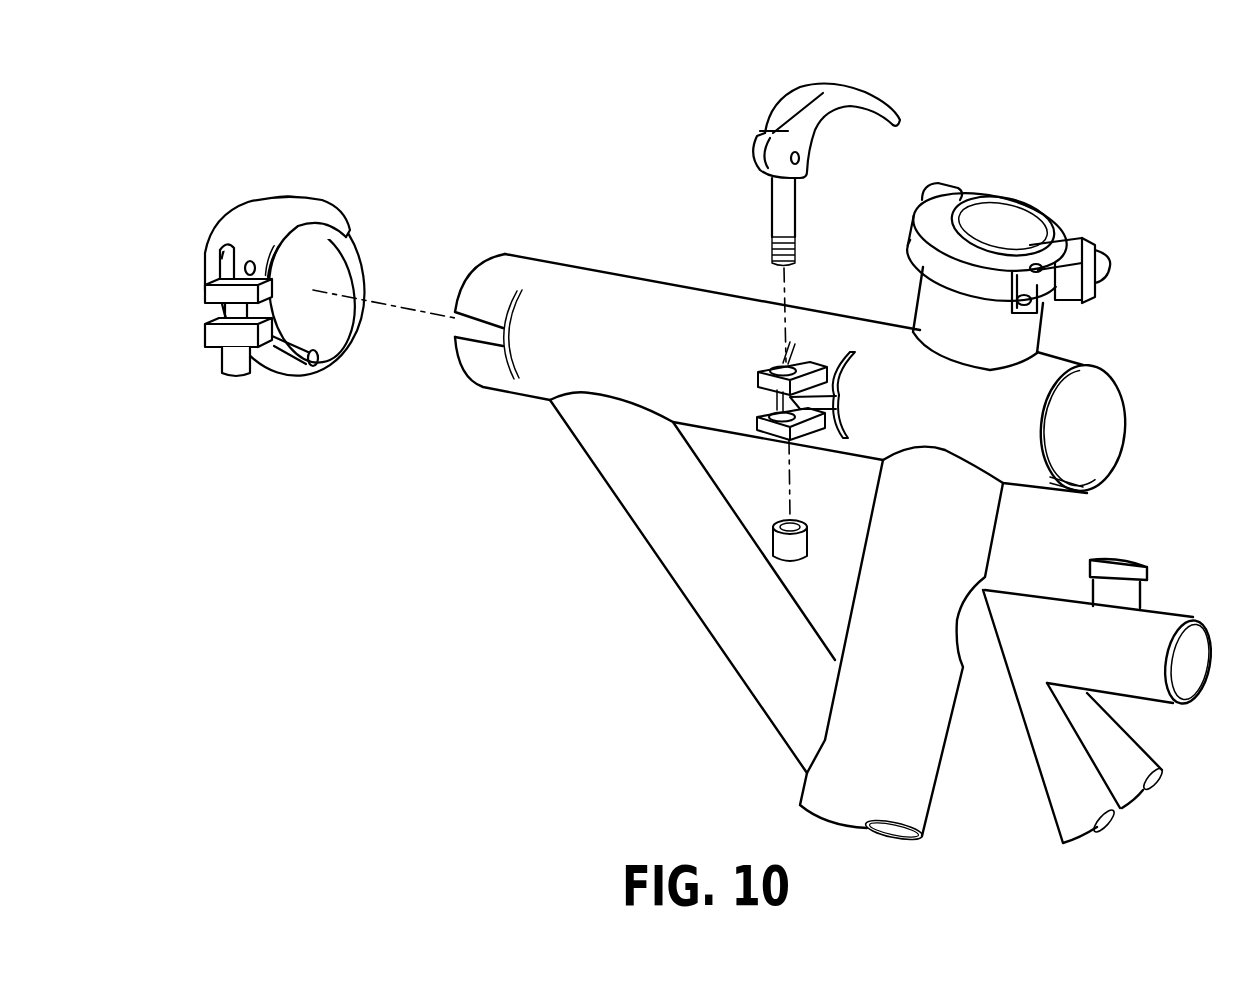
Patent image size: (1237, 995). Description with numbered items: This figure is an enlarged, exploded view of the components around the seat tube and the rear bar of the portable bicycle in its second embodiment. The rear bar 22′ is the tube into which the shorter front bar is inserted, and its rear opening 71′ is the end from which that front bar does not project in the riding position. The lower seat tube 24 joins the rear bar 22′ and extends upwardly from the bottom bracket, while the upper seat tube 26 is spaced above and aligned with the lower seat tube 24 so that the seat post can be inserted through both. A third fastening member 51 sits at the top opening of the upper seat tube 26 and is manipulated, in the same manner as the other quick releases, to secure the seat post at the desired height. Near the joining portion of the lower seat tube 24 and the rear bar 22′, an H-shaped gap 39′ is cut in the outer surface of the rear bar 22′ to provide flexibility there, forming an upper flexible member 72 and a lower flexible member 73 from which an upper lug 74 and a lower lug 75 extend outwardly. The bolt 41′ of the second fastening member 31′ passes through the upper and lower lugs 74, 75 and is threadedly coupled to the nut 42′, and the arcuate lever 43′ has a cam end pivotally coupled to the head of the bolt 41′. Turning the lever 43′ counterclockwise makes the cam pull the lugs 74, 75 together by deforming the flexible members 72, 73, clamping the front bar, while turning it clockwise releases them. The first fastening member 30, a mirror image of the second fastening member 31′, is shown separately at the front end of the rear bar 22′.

The first fastening member 30 is at (262, 190).
The rear bar 22′ is at (603, 282).
The second fastening member 31′ is at (796, 134).
The arcuate lever 43′ is at (832, 90).
The bolt 41′ is at (783, 201).
The upper lug 74 is at (802, 363).
The lower lug 75 is at (778, 427).
The upper flexible member 72 is at (830, 357).
The lower flexible member 73 is at (831, 432).
The H-shaped gap 39′ is at (854, 382).
The third fastening member 51 is at (1090, 222).
The upper seat tube 26 is at (1032, 330).
The rear opening 71′ is at (1123, 393).
The lower seat tube 24 is at (990, 513).
The nut 42′ is at (778, 547).